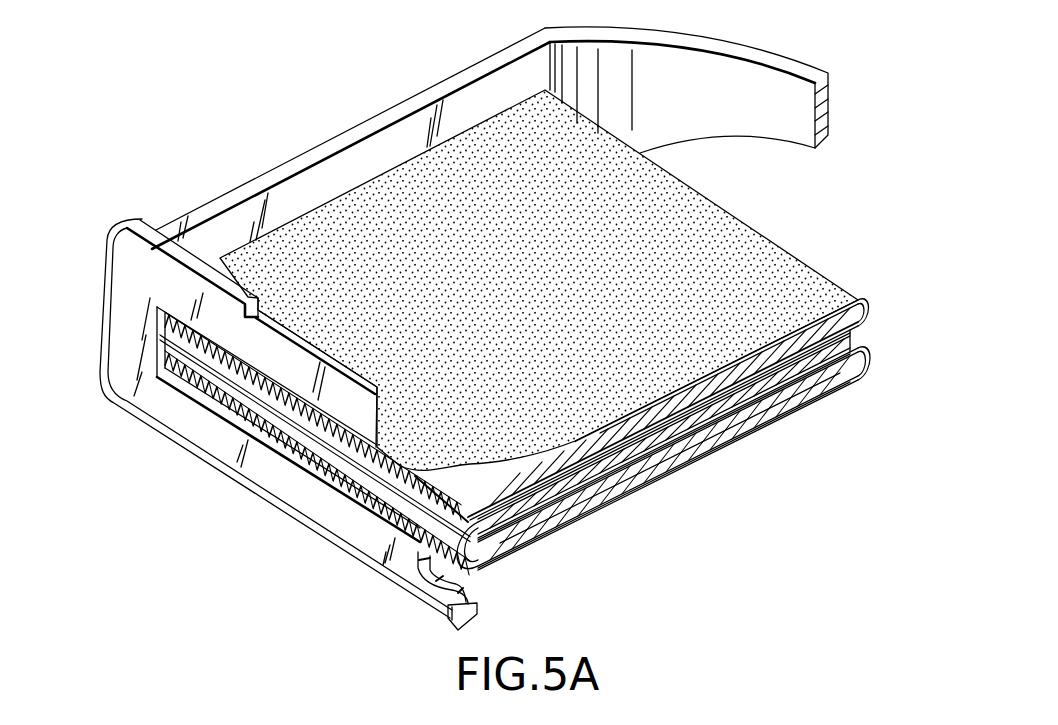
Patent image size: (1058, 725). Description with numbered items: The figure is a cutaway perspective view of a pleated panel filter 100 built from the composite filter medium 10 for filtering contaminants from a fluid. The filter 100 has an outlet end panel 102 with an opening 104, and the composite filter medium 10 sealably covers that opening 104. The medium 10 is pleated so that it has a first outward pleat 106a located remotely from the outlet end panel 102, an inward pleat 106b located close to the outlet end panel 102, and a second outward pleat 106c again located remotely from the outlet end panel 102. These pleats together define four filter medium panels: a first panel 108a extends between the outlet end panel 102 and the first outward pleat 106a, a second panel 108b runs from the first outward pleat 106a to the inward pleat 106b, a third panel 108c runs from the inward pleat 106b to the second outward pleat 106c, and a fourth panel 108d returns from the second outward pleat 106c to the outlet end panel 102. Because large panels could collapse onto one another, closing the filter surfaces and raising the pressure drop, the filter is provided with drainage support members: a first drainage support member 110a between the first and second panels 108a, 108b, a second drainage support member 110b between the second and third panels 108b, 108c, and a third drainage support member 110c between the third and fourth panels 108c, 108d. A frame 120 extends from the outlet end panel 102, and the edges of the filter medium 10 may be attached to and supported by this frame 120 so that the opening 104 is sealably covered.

The pleated panel filter 100 is at (424, 58).
The composite filter medium 10 is at (735, 223).
The outlet end panel 102 is at (127, 318).
The opening 104 is at (203, 401).
The first outward pleat 106a is at (862, 303).
The inward pleat 106b is at (353, 463).
The second outward pleat 106c is at (860, 351).
The first panel 108a is at (680, 400).
The second panel 108b is at (752, 387).
The third panel 108c is at (803, 381).
The fourth panel 108d is at (838, 381).
The first drainage support member 110a is at (500, 500).
The second drainage support member 110b is at (556, 497).
The third drainage support member 110c is at (652, 467).
The frame 120 is at (715, 104).